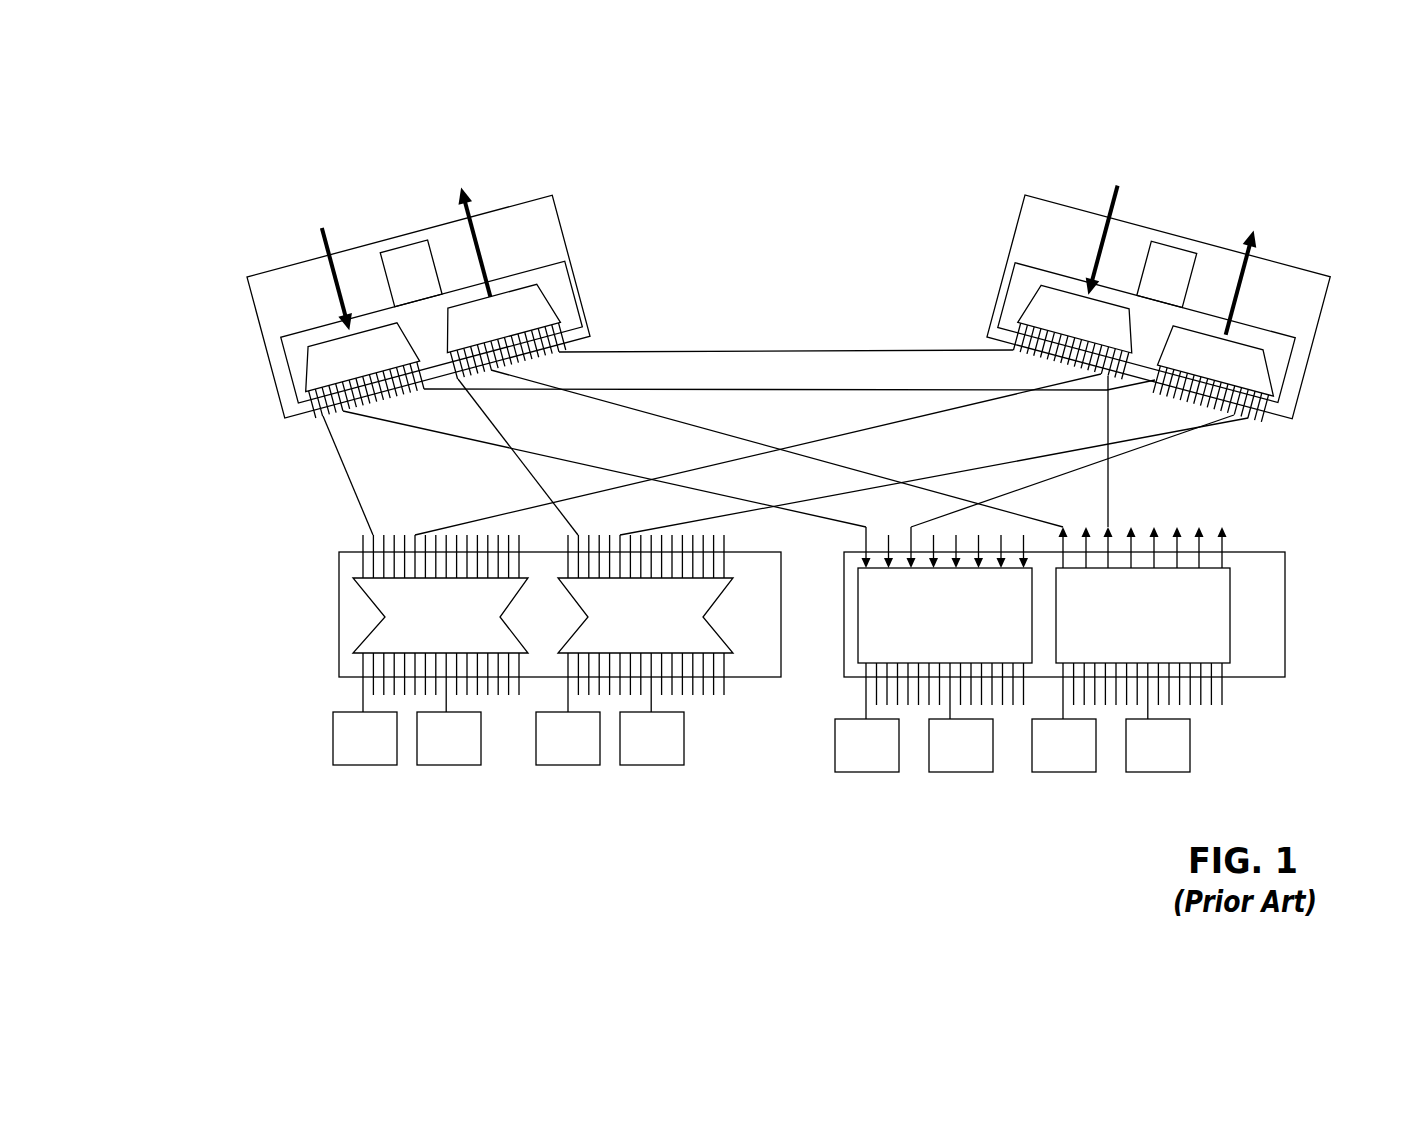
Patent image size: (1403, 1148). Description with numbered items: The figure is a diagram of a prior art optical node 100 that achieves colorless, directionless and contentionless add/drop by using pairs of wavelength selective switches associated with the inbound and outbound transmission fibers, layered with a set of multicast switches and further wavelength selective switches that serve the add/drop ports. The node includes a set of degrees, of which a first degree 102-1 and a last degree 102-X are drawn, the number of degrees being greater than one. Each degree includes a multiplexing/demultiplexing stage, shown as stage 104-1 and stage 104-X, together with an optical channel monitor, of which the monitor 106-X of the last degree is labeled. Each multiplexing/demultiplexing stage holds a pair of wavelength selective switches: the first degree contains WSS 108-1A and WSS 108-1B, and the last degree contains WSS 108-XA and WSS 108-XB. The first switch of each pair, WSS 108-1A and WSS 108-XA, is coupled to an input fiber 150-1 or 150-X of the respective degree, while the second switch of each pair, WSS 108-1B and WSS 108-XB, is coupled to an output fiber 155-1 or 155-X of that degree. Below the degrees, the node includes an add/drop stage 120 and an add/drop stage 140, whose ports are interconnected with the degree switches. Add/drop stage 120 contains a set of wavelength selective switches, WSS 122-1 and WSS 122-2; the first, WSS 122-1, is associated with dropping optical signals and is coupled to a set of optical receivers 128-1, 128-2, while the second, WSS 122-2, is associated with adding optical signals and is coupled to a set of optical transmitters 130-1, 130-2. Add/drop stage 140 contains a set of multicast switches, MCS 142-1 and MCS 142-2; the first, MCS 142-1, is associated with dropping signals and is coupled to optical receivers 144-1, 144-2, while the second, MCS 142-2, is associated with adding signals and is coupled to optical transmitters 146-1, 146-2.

The prior art optical node 100 is at (313, 85).
The degree 102-1 is at (414, 290).
The degree 102-X is at (1162, 291).
The multiplexing/demultiplexing stage 104-1 is at (434, 341).
The multiplexing/demultiplexing stage 104-X is at (1143, 344).
The optical channel monitor 106-X is at (1167, 274).
The WSS 108-1A is at (360, 368).
The WSS 108-1B is at (502, 329).
The WSS 108-XA is at (1077, 330).
The WSS 108-XB is at (1217, 373).
The input fiber 150-1 is at (312, 285).
The input fiber 150-X is at (1078, 234).
The output fiber 155-1 is at (497, 236).
The output fiber 155-X is at (1263, 289).
The add/drop stage 120 is at (739, 674).
The WSS 122-1 is at (415, 639).
The WSS 122-2 is at (622, 639).
The optical receiver 128-1 is at (342, 757).
The optical receiver 128-2 is at (426, 757).
The optical transmitter 130-1 is at (545, 757).
The optical transmitter 130-2 is at (629, 757).
The add/drop stage 140 is at (1247, 674).
The multicast switch 142-1 is at (922, 635).
The multicast switch 142-2 is at (1120, 635).
The optical receiver 144-1 is at (844, 764).
The optical receiver 144-2 is at (938, 764).
The optical transmitter 146-1 is at (1041, 764).
The optical transmitter 146-2 is at (1135, 764).